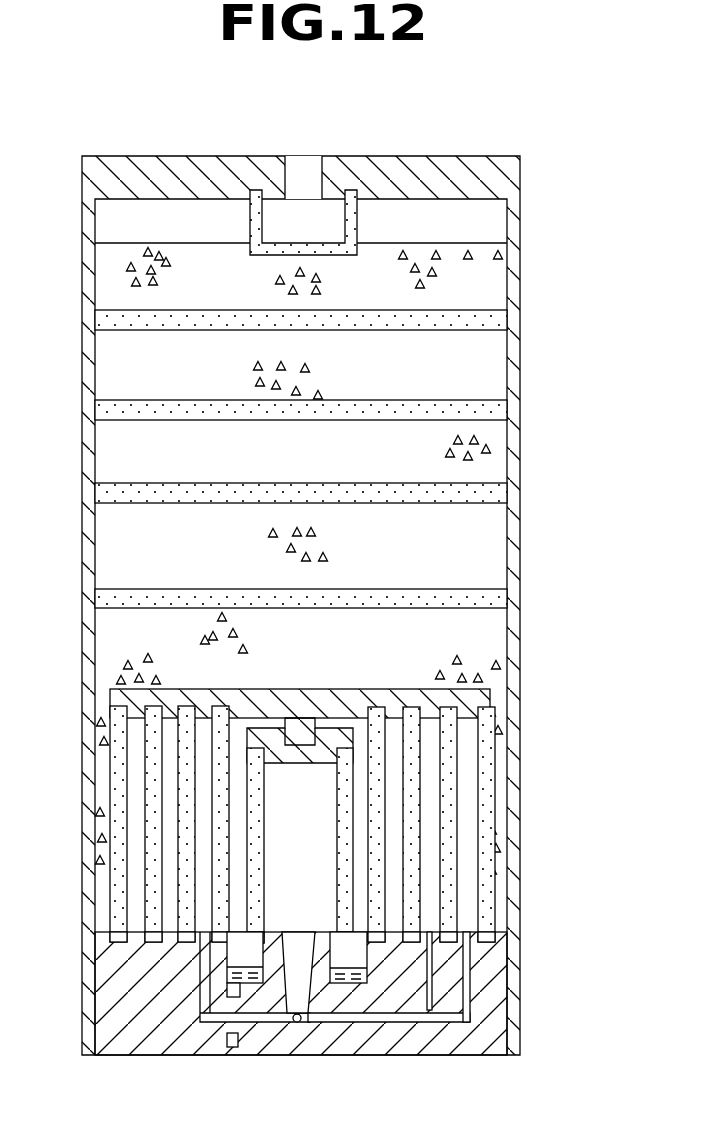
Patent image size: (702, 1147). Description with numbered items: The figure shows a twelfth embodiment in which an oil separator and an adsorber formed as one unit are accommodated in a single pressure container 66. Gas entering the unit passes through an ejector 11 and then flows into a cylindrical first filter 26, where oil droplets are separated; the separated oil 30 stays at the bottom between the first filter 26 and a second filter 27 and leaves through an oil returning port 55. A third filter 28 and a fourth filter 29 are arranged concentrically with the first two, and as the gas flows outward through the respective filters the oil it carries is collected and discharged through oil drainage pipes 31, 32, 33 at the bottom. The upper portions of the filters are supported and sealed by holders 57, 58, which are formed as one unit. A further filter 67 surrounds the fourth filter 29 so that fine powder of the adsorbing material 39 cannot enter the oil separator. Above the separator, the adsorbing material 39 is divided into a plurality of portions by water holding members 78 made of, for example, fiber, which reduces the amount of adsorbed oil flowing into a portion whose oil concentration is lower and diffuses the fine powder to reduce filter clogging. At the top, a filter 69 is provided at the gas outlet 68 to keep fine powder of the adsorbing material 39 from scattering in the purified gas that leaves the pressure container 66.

The ejector 11 is at (305, 1043).
The first filter 26 is at (355, 872).
The second filter 27 is at (218, 910).
The third filter 28 is at (190, 882).
The fourth filter 29 is at (153, 805).
The separated oil 30 is at (358, 985).
The oil drainage pipe 31 is at (196, 1013).
The oil drainage pipe 32 is at (298, 1024).
The oil drainage pipe 33 is at (470, 975).
The adsorbing material 39 is at (485, 344).
The oil returning port 55 is at (228, 1000).
The holder 57 is at (345, 742).
The holder 58 is at (470, 703).
The pressure container 66 is at (520, 437).
The filter 67 is at (118, 763).
The gas outlet 68 is at (302, 172).
The filter 69 is at (258, 218).
The water holding member 78 is at (120, 318).